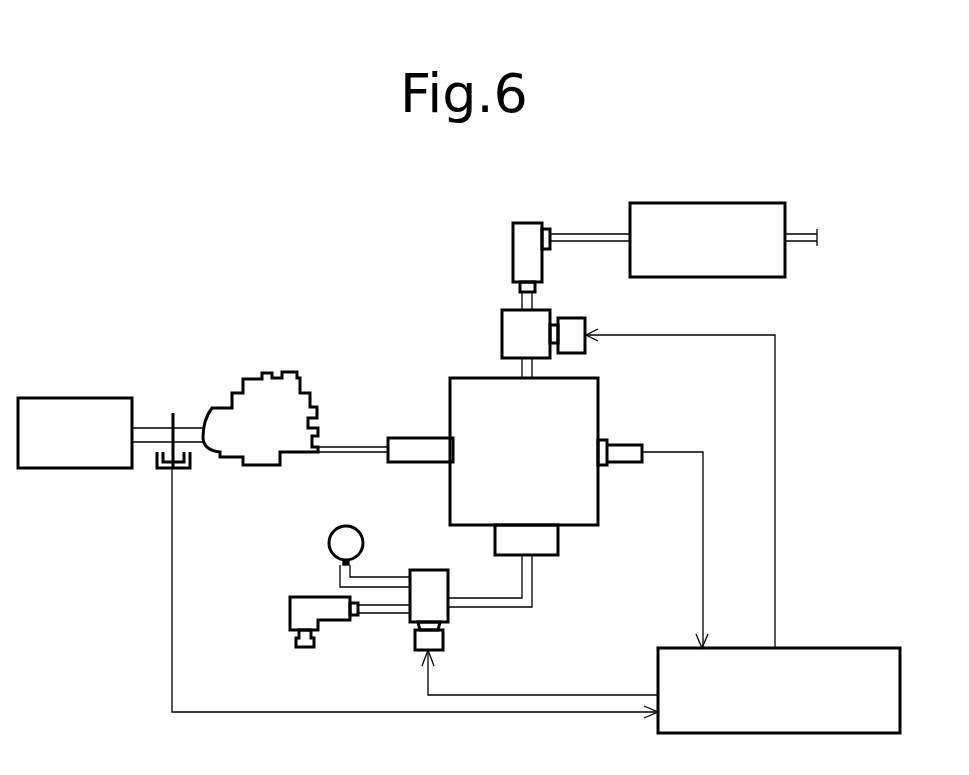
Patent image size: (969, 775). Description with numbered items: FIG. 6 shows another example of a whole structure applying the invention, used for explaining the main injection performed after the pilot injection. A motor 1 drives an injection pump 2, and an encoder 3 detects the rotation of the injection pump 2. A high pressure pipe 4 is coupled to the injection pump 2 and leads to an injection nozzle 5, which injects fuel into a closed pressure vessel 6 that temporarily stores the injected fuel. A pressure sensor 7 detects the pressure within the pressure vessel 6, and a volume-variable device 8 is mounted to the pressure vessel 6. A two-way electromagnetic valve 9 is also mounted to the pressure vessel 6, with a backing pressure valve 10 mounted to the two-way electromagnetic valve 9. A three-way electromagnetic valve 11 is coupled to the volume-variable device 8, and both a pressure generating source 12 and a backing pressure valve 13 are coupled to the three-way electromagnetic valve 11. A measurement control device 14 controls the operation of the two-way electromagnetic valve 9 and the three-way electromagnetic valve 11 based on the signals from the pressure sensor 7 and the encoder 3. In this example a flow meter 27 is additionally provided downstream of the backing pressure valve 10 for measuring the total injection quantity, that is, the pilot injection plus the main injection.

The motor 1 is at (100, 408).
The injection pump 2 is at (271, 392).
The encoder 3 is at (160, 469).
The high pressure pipe 4 is at (347, 446).
The injection nozzle 5 is at (418, 440).
The pressure vessel 6 is at (457, 488).
The pressure sensor 7 is at (623, 460).
The volume-variable device 8 is at (552, 538).
The two-way electromagnetic valve 9 is at (510, 335).
The backing pressure valve 10 is at (517, 250).
The three-way electromagnetic valve 11 is at (444, 612).
The pressure generating source 12 is at (331, 545).
The backing pressure valve 13 is at (297, 608).
The measurement control device 14 is at (848, 648).
The flow meter 27 is at (742, 205).